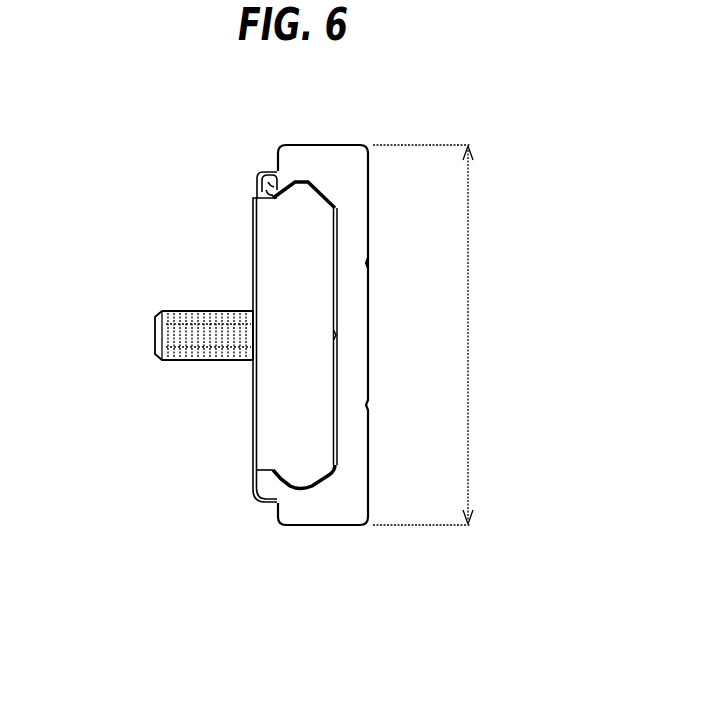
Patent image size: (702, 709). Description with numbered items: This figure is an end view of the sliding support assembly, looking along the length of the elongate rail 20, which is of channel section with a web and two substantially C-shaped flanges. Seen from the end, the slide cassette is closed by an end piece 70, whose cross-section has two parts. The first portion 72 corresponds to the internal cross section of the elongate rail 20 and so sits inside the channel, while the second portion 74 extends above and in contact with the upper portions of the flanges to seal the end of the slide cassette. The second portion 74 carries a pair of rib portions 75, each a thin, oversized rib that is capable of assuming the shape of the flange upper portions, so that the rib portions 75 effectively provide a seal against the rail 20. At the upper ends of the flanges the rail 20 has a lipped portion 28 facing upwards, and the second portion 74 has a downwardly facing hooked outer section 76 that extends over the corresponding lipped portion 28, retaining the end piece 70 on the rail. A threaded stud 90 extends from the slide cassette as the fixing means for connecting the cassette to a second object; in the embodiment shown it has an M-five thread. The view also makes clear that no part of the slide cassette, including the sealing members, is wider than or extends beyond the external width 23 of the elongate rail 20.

The elongate rail 20 is at (325, 533).
The external width 23 is at (468, 350).
The lipped portion 28 is at (275, 188).
The end piece 70 is at (303, 448).
The first portion 72 is at (318, 307).
The second portion 74 is at (268, 222).
The rib portion 75 is at (275, 186).
The hooked outer section 76 is at (263, 175).
The threaded stud 90 is at (155, 330).